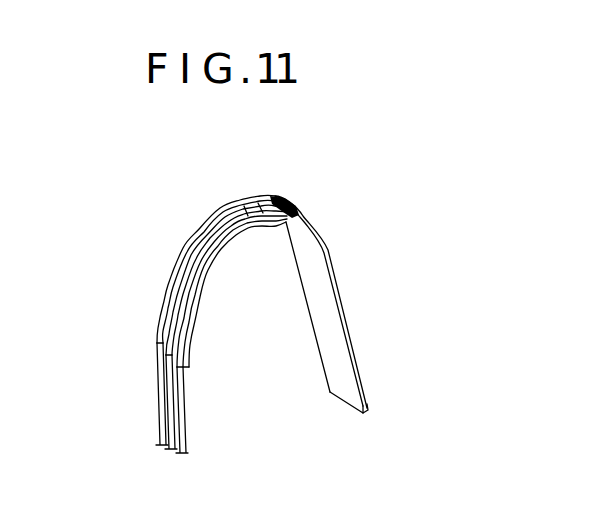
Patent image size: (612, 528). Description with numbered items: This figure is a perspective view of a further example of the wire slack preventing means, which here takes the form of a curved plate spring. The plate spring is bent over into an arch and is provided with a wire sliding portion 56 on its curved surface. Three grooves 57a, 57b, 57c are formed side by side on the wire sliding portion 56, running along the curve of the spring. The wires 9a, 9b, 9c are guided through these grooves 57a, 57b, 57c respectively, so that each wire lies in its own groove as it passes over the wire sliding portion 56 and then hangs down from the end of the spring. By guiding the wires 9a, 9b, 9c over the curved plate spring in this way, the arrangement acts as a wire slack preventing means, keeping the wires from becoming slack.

The wire sliding portion 56 is at (228, 204).
The groove 57a is at (192, 245).
The groove 57b is at (236, 222).
The groove 57c is at (278, 204).
The wire 9a is at (160, 397).
The wire 9b is at (160, 370).
The wire 9c is at (160, 428).